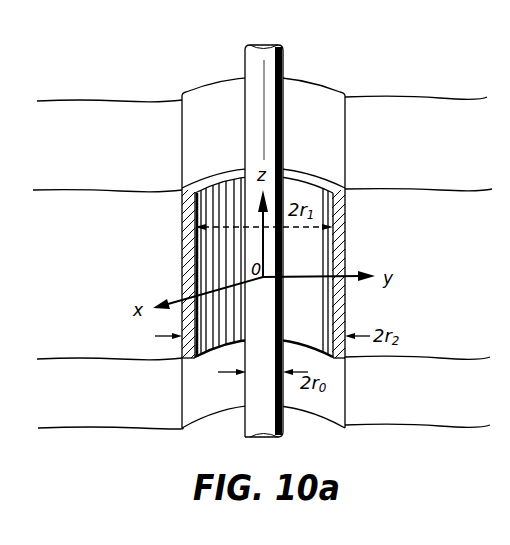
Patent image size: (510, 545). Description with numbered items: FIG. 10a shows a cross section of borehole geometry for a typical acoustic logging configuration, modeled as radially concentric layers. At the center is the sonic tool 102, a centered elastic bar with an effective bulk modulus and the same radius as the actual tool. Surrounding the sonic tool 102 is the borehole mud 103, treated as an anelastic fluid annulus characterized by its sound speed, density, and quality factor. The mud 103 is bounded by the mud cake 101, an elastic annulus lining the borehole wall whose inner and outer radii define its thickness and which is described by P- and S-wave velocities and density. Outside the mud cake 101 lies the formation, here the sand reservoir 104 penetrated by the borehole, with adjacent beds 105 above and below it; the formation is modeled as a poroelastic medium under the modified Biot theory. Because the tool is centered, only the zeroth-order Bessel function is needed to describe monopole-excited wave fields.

The mud cake 101 is at (182, 229).
The sonic tool 102 is at (245, 57).
The mud 103 is at (322, 322).
The sand reservoir 104 is at (433, 249).
The adjacent beds 105 is at (433, 152).